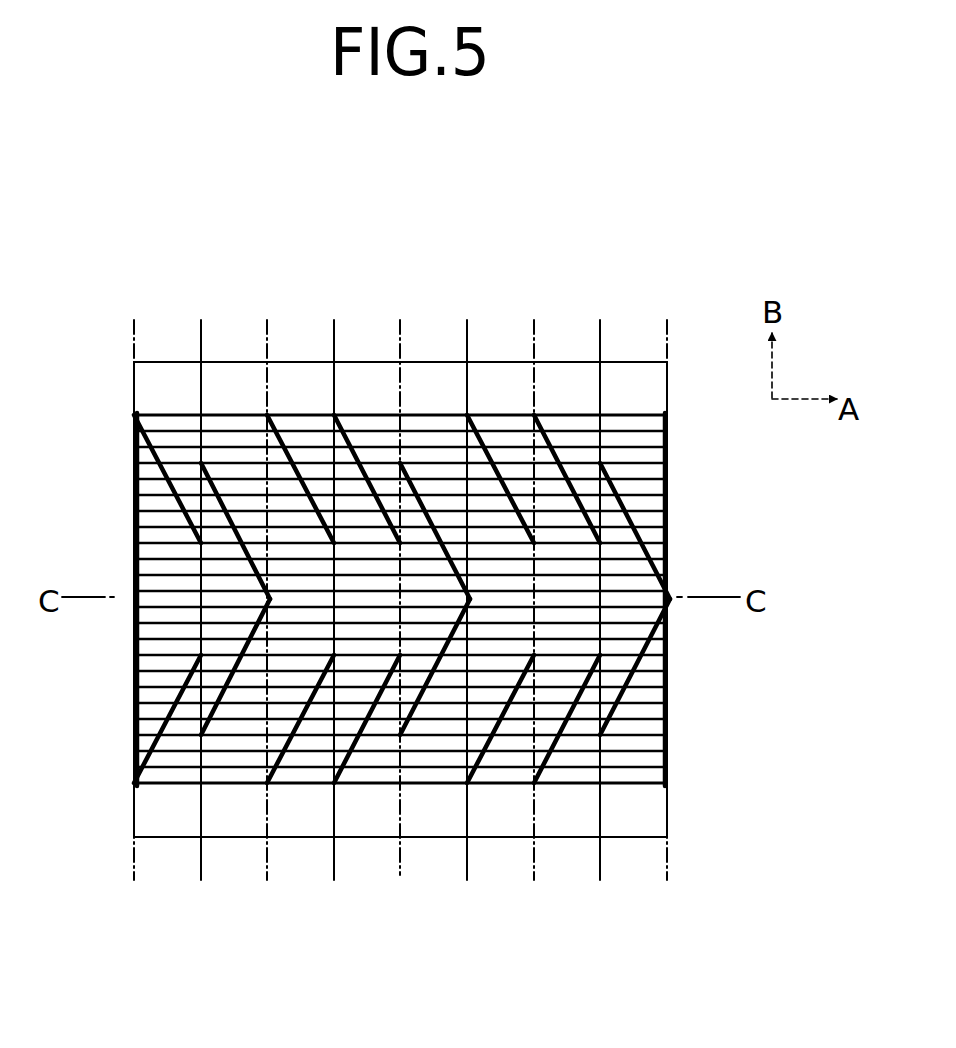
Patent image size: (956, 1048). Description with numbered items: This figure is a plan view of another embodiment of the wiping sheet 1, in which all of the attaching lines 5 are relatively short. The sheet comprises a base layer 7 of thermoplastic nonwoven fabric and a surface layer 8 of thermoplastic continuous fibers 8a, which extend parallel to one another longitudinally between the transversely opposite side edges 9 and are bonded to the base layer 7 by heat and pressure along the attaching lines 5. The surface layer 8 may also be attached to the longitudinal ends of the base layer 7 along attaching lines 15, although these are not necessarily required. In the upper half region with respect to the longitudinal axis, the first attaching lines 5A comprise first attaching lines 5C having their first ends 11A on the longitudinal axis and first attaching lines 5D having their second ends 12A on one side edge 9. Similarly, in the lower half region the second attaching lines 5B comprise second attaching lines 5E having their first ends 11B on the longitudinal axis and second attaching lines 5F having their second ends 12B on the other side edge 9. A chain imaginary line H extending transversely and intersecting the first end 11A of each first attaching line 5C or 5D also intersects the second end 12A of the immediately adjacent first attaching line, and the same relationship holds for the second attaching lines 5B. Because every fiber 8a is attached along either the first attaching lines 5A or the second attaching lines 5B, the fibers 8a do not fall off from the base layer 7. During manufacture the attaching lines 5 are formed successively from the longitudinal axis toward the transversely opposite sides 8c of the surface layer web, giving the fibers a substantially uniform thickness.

The wiping sheet 1 is at (598, 260).
The attaching lines 5 is at (643, 507).
The first attaching lines 5A is at (373, 406).
The second attaching lines 5B is at (325, 795).
The first attaching lines having first ends on the longitudinal axis 5C is at (430, 497).
The first attaching lines having second ends on a side edge 5D is at (288, 442).
The second attaching lines having first ends on the longitudinal axis 5E is at (420, 693).
The second attaching lines having second ends on the other side edge 5F is at (280, 760).
The base layer 7 is at (637, 845).
The surface layer 8 is at (647, 723).
The continuous fibers 8a is at (643, 457).
The transversely opposite sides 8c is at (175, 414).
The side edges 9 is at (657, 385).
The first ends of first attaching lines 11A is at (643, 542).
The first ends of second attaching lines 11B is at (600, 657).
The second ends of first attaching lines 12A is at (533, 414).
The second ends of second attaching lines 12B is at (600, 730).
The attaching lines at longitudinal ends 15 is at (145, 533).
The imaginary line H is at (403, 873).